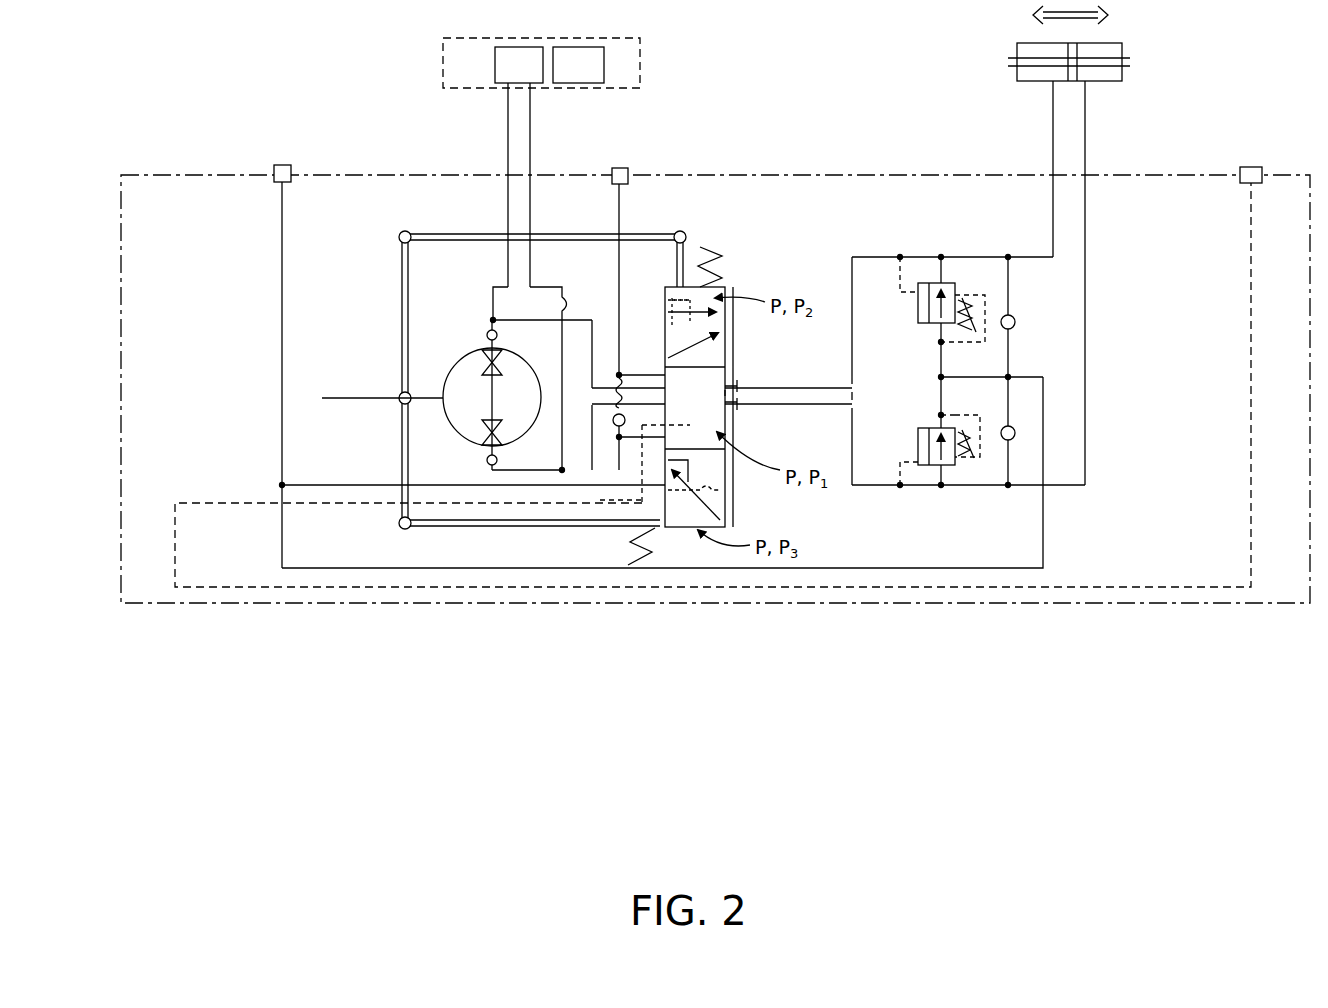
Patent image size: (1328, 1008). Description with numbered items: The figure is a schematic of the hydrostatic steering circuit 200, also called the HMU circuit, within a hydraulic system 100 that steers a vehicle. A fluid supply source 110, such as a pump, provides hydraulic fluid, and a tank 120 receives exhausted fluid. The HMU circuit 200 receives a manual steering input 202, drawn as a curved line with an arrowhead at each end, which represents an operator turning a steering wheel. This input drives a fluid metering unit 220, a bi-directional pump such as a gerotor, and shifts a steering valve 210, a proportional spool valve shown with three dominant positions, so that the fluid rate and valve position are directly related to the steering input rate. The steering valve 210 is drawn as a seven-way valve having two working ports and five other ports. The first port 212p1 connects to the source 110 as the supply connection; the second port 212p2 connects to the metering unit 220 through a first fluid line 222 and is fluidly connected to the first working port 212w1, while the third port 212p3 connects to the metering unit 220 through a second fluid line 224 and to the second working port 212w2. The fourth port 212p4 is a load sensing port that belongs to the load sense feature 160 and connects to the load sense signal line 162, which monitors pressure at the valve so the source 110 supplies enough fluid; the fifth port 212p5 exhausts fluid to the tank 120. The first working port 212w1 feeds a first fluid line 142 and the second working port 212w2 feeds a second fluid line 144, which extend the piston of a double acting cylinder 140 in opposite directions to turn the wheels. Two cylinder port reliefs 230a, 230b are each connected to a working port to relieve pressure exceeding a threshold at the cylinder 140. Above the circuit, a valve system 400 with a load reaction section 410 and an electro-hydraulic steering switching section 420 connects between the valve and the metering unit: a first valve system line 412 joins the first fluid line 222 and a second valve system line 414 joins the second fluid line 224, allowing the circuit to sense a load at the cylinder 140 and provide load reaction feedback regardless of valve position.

The hydraulic system 100 is at (1225, 692).
The fluid supply source 110 is at (630, 169).
The tank 120 is at (276, 166).
The hydraulic cylinder 140 is at (1122, 50).
The first fluid line 142 is at (1048, 133).
The second fluid line 144 is at (1090, 128).
The load sense feature 160 is at (1240, 168).
The load sense signal line 162 is at (1246, 218).
The hydro-static steering circuit 200 is at (165, 175).
The manual steering input 202 is at (362, 430).
The steering valve 210 is at (738, 268).
The first port 212p1 is at (672, 372).
The second port 212p2 is at (672, 386).
The third port 212p3 is at (670, 437).
The fourth port 212p4 is at (672, 405).
The fifth port 212p5 is at (672, 420).
The first working port 212w1 is at (728, 388).
The second working port 212w2 is at (728, 404).
The fluid metering unit 220 is at (456, 440).
The first fluid line 222 is at (487, 335).
The second fluid line 224 is at (487, 460).
The cylinder port relief 230a is at (913, 318).
The cylinder port relief 230b is at (913, 455).
The valve system 400 is at (541, 63).
The load reaction section 410 is at (519, 65).
The first valve system line 412 is at (503, 108).
The second valve system line 414 is at (535, 108).
The electro-hydraulic steering switching section 420 is at (578, 65).